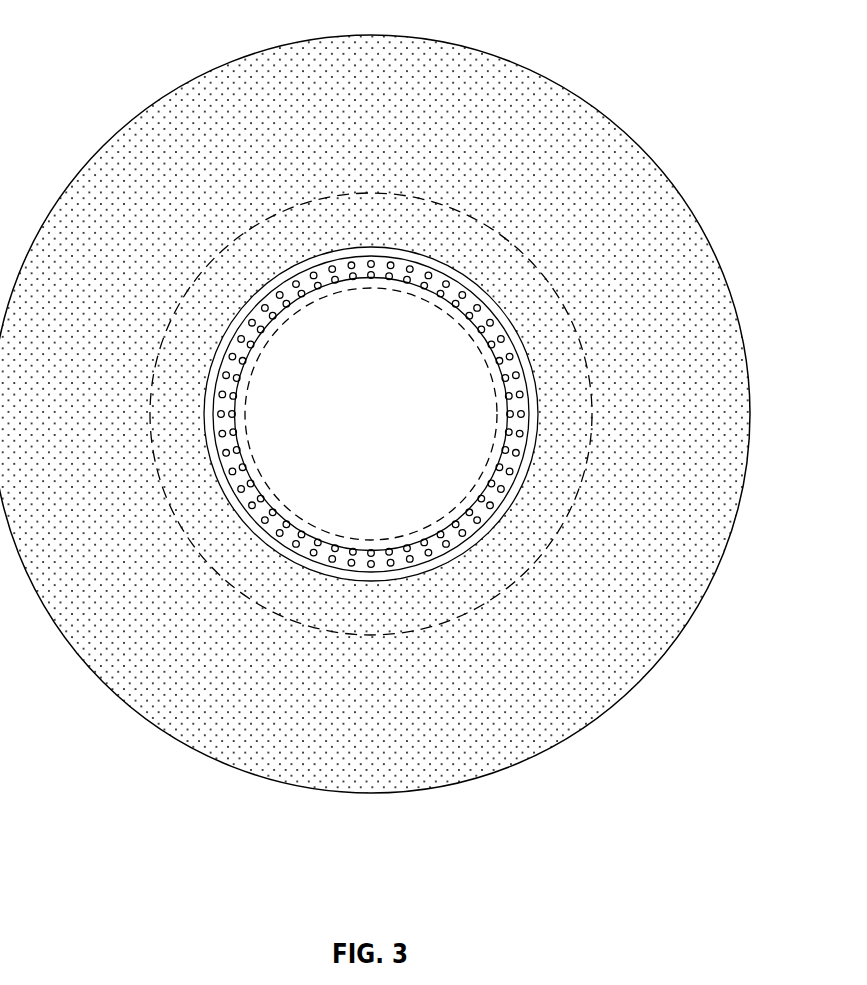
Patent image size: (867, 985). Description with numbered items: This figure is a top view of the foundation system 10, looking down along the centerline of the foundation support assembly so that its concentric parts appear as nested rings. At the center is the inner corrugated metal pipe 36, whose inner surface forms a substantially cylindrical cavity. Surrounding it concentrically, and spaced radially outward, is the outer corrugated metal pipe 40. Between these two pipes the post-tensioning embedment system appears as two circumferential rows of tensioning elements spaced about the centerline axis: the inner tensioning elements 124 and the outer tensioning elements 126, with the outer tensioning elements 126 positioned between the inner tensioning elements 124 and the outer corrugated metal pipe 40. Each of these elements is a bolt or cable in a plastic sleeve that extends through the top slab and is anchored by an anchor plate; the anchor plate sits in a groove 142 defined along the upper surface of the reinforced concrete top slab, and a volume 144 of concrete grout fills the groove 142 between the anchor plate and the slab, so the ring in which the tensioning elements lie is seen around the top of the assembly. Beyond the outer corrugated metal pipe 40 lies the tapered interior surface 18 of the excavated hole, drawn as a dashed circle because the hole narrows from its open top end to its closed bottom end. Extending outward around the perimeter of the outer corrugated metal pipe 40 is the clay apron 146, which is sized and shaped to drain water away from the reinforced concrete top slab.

The foundation system 10 is at (594, 39).
The clay apron 146 is at (632, 138).
The tapered interior surface 18 is at (540, 273).
The outer tensioning elements 126 is at (537, 392).
The inner tensioning elements 124 is at (506, 414).
The groove 142 is at (371, 414).
The volume of concrete grout 144 is at (237, 442).
The inner corrugated metal pipe 36 is at (260, 481).
The outer corrugated metal pipe 40 is at (222, 490).